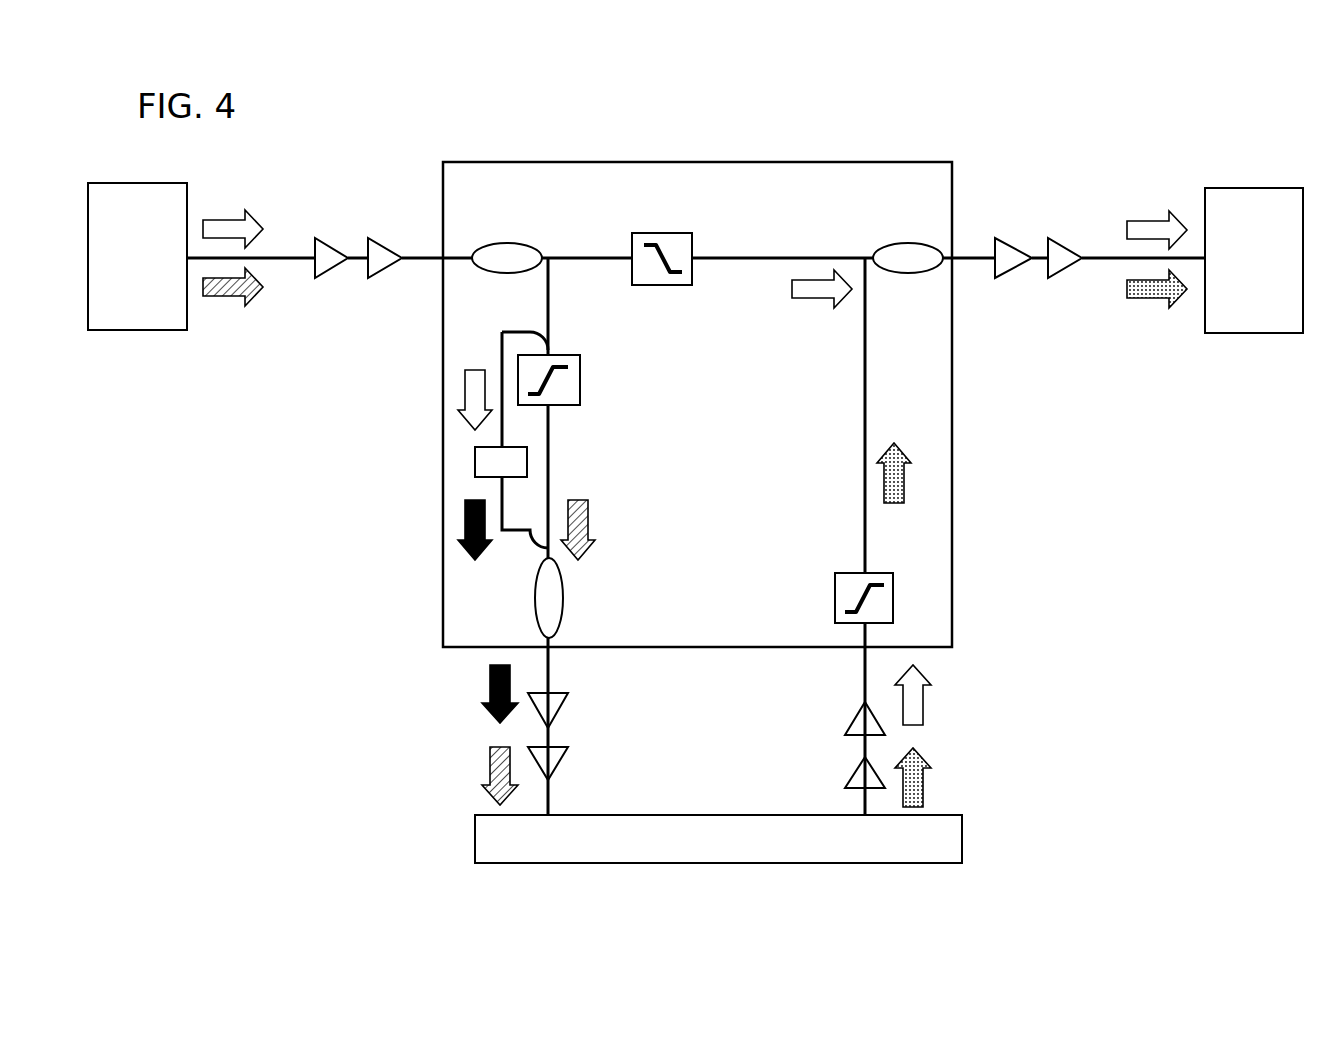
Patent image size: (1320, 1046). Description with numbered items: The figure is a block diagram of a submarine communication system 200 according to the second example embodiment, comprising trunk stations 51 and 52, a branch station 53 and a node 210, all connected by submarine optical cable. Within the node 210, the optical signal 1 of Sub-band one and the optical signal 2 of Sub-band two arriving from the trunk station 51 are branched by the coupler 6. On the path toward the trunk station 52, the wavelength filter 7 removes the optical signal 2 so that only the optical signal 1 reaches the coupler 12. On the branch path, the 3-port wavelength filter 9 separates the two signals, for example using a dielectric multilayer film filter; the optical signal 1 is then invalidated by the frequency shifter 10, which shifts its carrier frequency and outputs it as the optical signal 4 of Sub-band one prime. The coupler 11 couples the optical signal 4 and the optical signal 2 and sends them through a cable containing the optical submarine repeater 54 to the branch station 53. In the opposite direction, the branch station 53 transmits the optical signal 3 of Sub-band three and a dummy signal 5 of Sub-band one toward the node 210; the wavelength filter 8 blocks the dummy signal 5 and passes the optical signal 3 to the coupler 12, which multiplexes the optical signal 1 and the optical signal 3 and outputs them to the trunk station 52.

The optical signal 1 is at (216, 211).
The optical signal 2 is at (214, 306).
The optical signal 3 is at (904, 490).
The optical signal 4 is at (483, 679).
The dummy signal 5 is at (933, 710).
The coupler 6 is at (506, 242).
The wavelength filter 7 is at (643, 232).
The wavelength filter 8 is at (893, 598).
The 3-port wavelength filter 9 is at (580, 385).
The frequency shifter 10 is at (475, 462).
The coupler 11 is at (563, 598).
The coupler 12 is at (901, 242).
The trunk station 51 is at (121, 333).
The trunk station 52 is at (1236, 336).
The branch station 53 is at (962, 820).
The optical submarine repeater 54 is at (560, 715).
The submarine communication system 200 is at (866, 128).
The node 210 is at (952, 427).